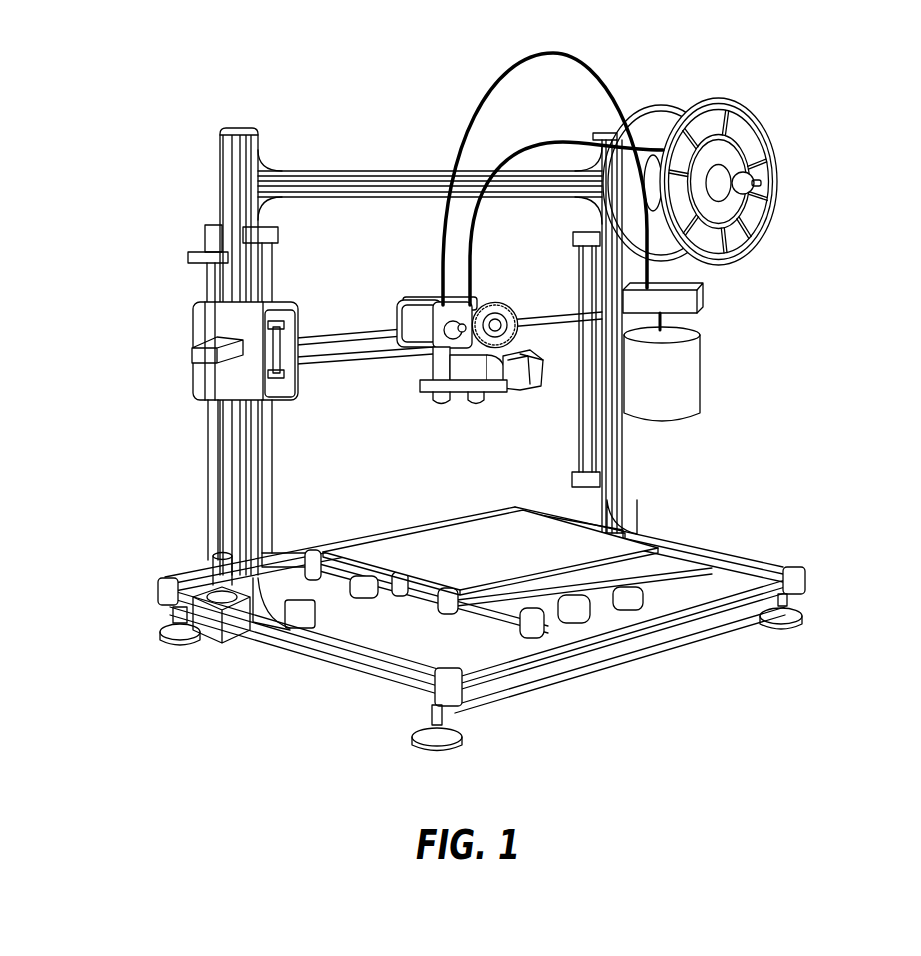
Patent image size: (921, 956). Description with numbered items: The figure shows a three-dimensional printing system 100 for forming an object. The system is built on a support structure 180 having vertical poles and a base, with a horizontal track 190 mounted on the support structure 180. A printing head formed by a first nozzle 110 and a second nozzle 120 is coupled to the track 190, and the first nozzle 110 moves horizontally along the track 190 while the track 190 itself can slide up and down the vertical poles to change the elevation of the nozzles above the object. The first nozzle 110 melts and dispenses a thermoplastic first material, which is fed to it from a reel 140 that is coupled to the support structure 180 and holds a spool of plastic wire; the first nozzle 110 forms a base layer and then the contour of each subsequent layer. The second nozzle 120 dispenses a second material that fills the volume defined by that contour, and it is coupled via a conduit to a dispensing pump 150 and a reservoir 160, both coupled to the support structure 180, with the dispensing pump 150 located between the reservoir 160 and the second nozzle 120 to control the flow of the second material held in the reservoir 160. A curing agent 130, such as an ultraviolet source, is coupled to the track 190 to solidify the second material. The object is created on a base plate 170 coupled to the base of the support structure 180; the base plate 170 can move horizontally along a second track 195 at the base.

The 3D printing system 100 is at (510, 391).
The first nozzle 110 is at (470, 400).
The second nozzle 120 is at (456, 386).
The curing agent 130 is at (507, 375).
The reel 140 is at (672, 128).
The dispensing pump 150 is at (688, 299).
The reservoir 160 is at (690, 360).
The base plate 170 is at (432, 553).
The support structure 180 is at (213, 172).
The track 190 is at (320, 164).
The second track 195 is at (343, 619).